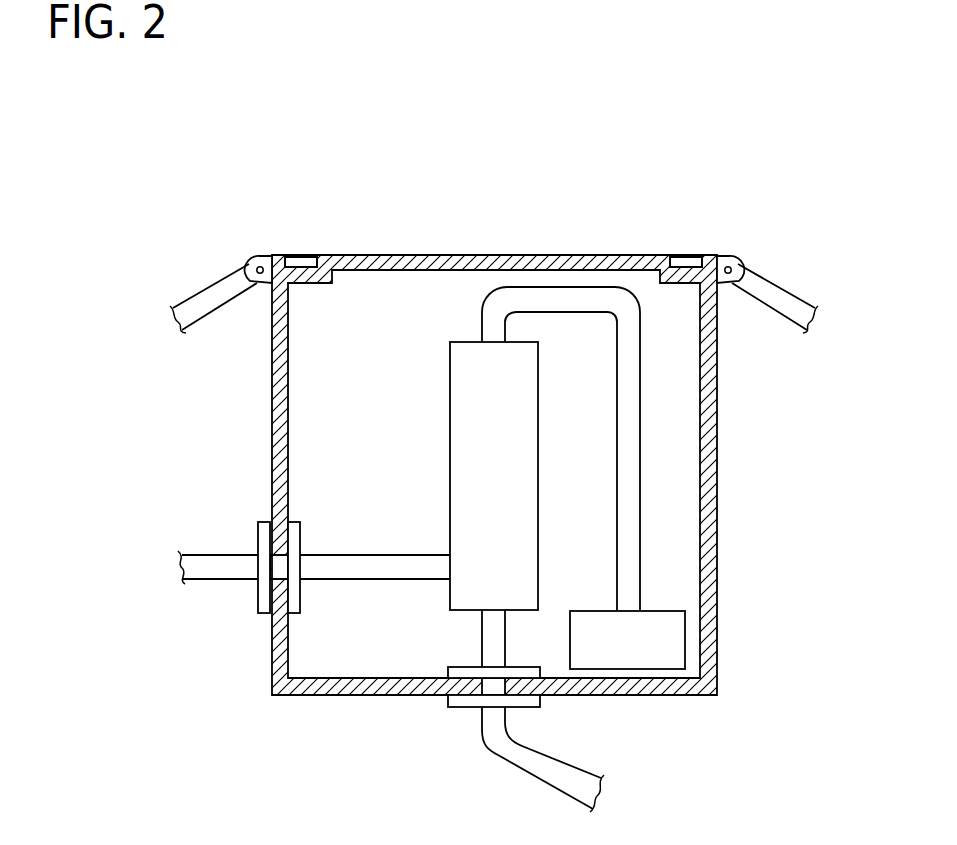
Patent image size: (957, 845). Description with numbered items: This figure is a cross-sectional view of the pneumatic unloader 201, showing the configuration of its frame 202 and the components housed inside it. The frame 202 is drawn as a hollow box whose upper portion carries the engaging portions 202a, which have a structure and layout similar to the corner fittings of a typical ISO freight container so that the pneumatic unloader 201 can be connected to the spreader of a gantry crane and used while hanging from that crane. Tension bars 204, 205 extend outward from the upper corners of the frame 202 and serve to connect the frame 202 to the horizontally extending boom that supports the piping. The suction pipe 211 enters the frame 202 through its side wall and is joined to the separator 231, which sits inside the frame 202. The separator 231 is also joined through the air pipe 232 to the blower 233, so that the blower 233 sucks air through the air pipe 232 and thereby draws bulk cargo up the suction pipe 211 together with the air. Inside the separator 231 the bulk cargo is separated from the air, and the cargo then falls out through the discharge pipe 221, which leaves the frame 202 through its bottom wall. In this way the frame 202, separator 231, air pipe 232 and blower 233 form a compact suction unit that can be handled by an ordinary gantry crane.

The pneumatic unloader 201 is at (712, 106).
The frame 202 is at (717, 543).
The engaging portions 202a is at (297, 257).
The tension bar 204 is at (210, 285).
The tension bar 205 is at (783, 285).
The suction pipe 211 is at (225, 581).
The discharge pipe 221 is at (482, 732).
The separator 231 is at (450, 393).
The air pipe 232 is at (640, 448).
The blower 233 is at (685, 633).